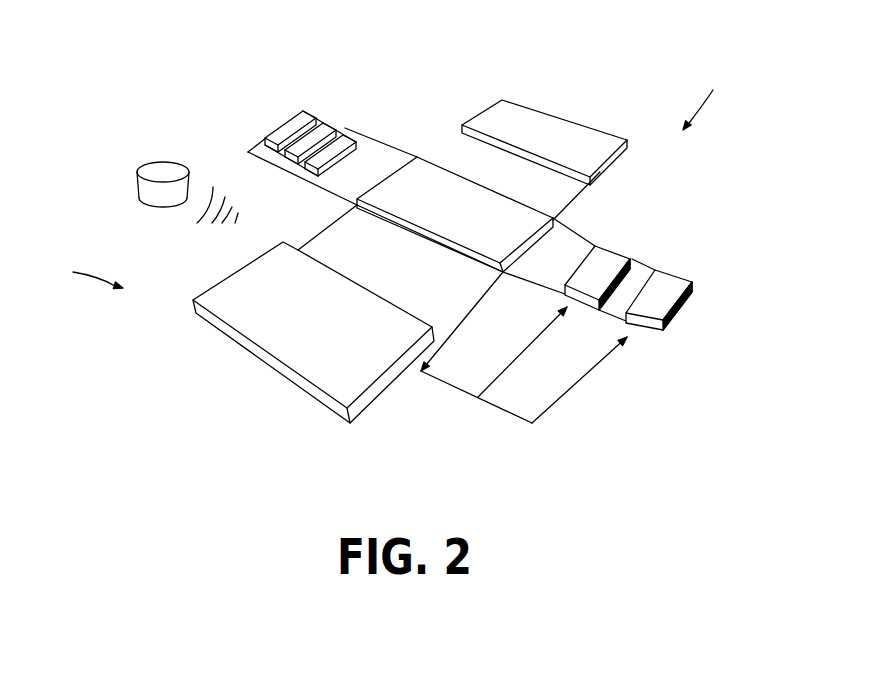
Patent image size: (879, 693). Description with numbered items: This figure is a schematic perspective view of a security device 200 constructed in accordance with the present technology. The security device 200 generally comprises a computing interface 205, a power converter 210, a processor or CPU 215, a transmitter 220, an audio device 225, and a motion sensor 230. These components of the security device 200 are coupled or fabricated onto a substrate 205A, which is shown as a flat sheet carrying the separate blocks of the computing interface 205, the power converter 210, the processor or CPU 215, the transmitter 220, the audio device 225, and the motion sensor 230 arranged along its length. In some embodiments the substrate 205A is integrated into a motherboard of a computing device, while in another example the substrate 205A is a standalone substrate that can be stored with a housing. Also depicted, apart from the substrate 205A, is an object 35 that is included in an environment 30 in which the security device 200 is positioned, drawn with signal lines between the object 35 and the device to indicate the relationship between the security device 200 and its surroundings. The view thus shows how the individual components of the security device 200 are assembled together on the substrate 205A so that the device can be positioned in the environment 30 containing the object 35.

The environment 30 is at (86, 276).
The object 35 is at (168, 162).
The security device 200 is at (705, 97).
The computing interface 205 is at (678, 284).
The substrate 205A is at (566, 197).
The power converter 210 is at (614, 260).
The processor or CPU 215 is at (233, 315).
The transmitter 220 is at (347, 128).
The audio device 225 is at (533, 122).
The motion sensor 230 is at (493, 247).